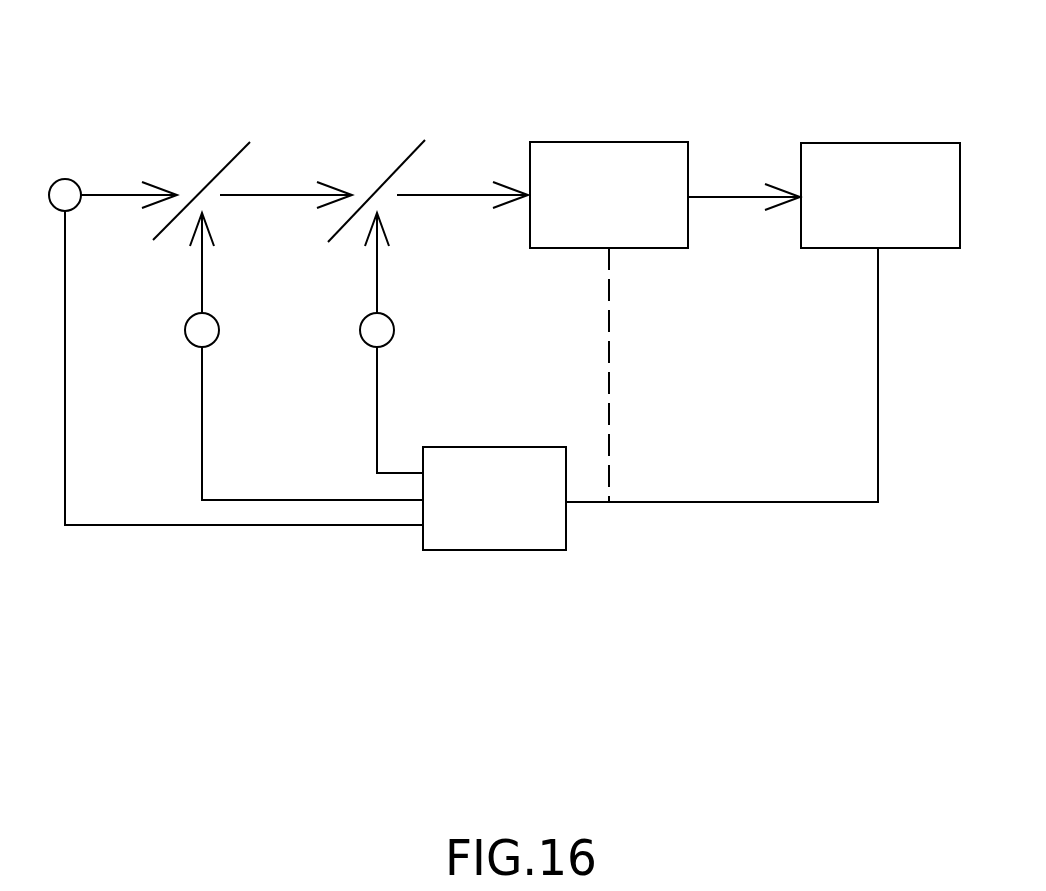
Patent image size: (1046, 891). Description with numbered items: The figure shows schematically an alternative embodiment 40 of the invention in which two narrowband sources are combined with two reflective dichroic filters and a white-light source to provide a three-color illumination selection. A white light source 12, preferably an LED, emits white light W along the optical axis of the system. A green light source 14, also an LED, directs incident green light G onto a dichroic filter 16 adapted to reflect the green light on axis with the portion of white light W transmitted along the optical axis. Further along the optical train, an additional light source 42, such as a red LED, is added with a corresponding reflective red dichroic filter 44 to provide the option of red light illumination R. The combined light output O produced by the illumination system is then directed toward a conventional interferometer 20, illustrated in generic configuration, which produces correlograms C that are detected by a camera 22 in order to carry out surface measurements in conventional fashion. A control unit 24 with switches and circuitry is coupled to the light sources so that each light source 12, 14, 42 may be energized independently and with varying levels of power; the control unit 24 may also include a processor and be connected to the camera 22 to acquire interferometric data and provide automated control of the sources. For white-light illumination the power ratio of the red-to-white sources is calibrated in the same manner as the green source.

The white light source 12 is at (73, 178).
The green light source 14 is at (220, 330).
The dichroic filter 16 is at (222, 167).
The interferometer 20 is at (613, 162).
The camera 22 is at (890, 165).
The control unit 24 is at (510, 533).
The alternative embodiment 40 is at (528, 110).
The additional light source 42 is at (393, 333).
The reflective red dichroic filter 44 is at (397, 167).
The white light W is at (122, 197).
The green light G is at (202, 277).
The red light illumination R is at (377, 277).
The combined light output O is at (440, 195).
The correlograms C is at (733, 198).